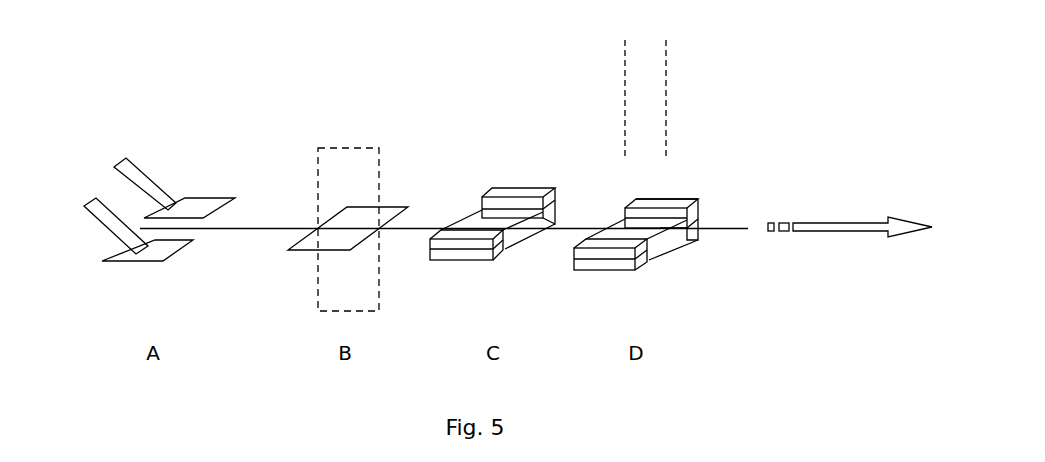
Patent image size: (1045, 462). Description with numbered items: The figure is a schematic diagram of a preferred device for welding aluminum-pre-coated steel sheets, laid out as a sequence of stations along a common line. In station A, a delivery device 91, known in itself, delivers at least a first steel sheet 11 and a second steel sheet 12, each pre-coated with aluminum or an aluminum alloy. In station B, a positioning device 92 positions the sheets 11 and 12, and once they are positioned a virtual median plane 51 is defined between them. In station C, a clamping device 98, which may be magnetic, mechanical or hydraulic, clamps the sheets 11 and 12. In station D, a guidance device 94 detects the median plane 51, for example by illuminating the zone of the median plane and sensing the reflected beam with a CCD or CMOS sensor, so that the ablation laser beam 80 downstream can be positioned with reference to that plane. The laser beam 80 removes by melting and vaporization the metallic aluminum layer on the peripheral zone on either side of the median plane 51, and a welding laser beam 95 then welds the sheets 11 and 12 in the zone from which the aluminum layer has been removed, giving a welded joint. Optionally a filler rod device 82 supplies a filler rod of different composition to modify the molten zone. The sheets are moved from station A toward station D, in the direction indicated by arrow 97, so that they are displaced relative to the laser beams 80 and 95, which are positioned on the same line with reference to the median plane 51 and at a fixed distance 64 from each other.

The delivery device 91 is at (85, 188).
The second steel sheet 12 is at (193, 208).
The first steel sheet 11 is at (125, 252).
The virtual median plane 51 is at (338, 157).
The positioning device 92 is at (377, 203).
The clamping device 98 is at (440, 228).
The guidance device 94 is at (614, 222).
The ablation laser beam 80 is at (624, 204).
The welding laser beam 95 is at (664, 221).
The filler rod device 82 is at (680, 198).
The fixed distance 64 is at (659, 53).
The transport direction 97 is at (850, 213).